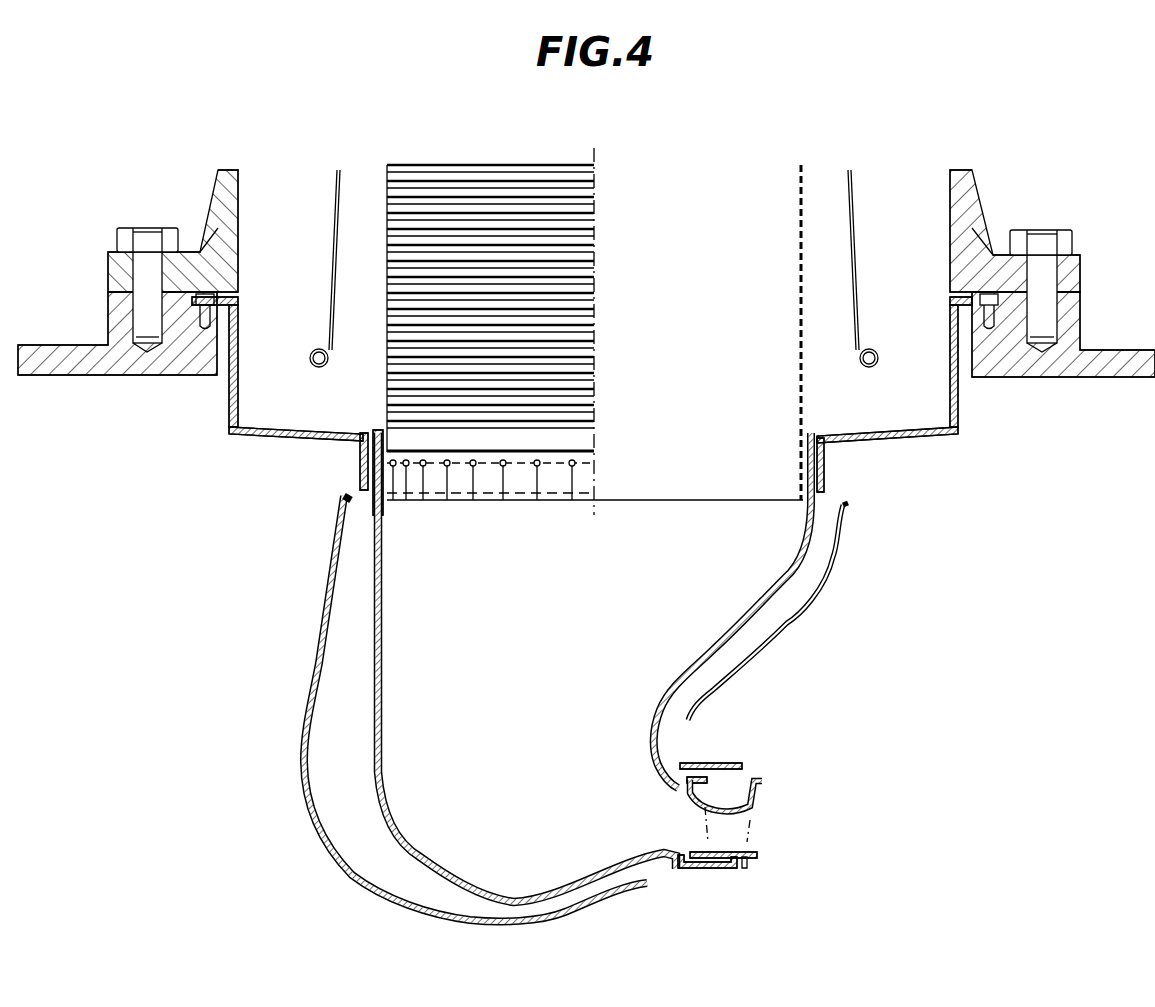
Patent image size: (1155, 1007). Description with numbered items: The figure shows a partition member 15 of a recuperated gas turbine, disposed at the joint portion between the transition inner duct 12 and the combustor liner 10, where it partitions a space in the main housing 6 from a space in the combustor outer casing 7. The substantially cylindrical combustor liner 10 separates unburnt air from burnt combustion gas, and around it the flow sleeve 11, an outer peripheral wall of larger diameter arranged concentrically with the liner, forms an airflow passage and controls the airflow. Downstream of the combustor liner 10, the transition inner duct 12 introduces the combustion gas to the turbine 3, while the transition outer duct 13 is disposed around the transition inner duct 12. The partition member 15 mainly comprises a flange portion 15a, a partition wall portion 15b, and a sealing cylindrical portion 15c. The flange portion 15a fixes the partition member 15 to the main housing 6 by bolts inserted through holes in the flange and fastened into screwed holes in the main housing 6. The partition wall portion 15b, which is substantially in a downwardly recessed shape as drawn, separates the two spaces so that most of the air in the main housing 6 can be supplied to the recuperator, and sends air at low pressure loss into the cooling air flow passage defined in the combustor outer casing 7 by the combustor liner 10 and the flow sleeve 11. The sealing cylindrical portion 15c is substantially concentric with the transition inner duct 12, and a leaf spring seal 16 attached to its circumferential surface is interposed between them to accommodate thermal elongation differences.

The turbine 3 is at (738, 845).
The main housing 6 is at (69, 377).
The combustor outer casing 7 is at (220, 206).
The combustor liner 10 is at (652, 483).
The flow sleeve 11 is at (335, 205).
The transition inner duct 12 is at (383, 650).
The transition outer duct 13 is at (300, 722).
The partition member 15 is at (247, 441).
The flange portion 15a is at (239, 301).
The partition wall portion 15b is at (240, 388).
The sealing cylindrical portion 15c is at (359, 462).
The leaf spring seal 16 is at (371, 431).